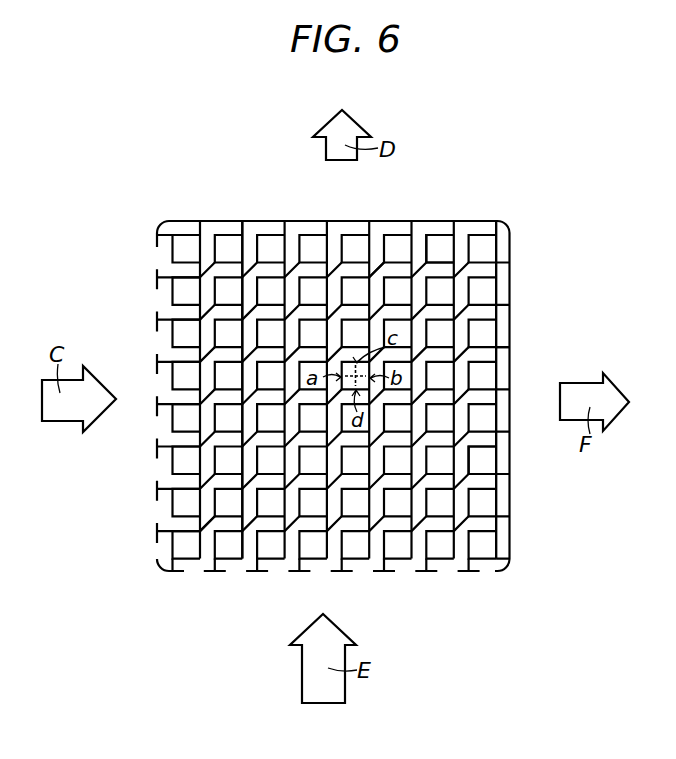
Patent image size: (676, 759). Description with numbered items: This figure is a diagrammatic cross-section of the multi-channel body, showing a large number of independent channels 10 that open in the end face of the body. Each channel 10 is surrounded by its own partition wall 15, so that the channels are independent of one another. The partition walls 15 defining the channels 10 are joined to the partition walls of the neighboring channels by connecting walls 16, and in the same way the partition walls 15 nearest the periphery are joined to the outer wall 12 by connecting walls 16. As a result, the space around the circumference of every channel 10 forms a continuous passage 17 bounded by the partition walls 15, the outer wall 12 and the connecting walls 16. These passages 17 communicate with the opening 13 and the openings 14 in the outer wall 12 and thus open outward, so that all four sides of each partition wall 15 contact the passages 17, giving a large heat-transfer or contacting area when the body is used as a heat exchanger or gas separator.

The independent channel 10 is at (350, 362).
The outer wall 12 is at (510, 315).
The opening 13 is at (157, 303).
The opening 14 is at (401, 572).
The partition wall 15 is at (435, 265).
The connecting wall 16 is at (378, 270).
The passage 17 is at (460, 298).